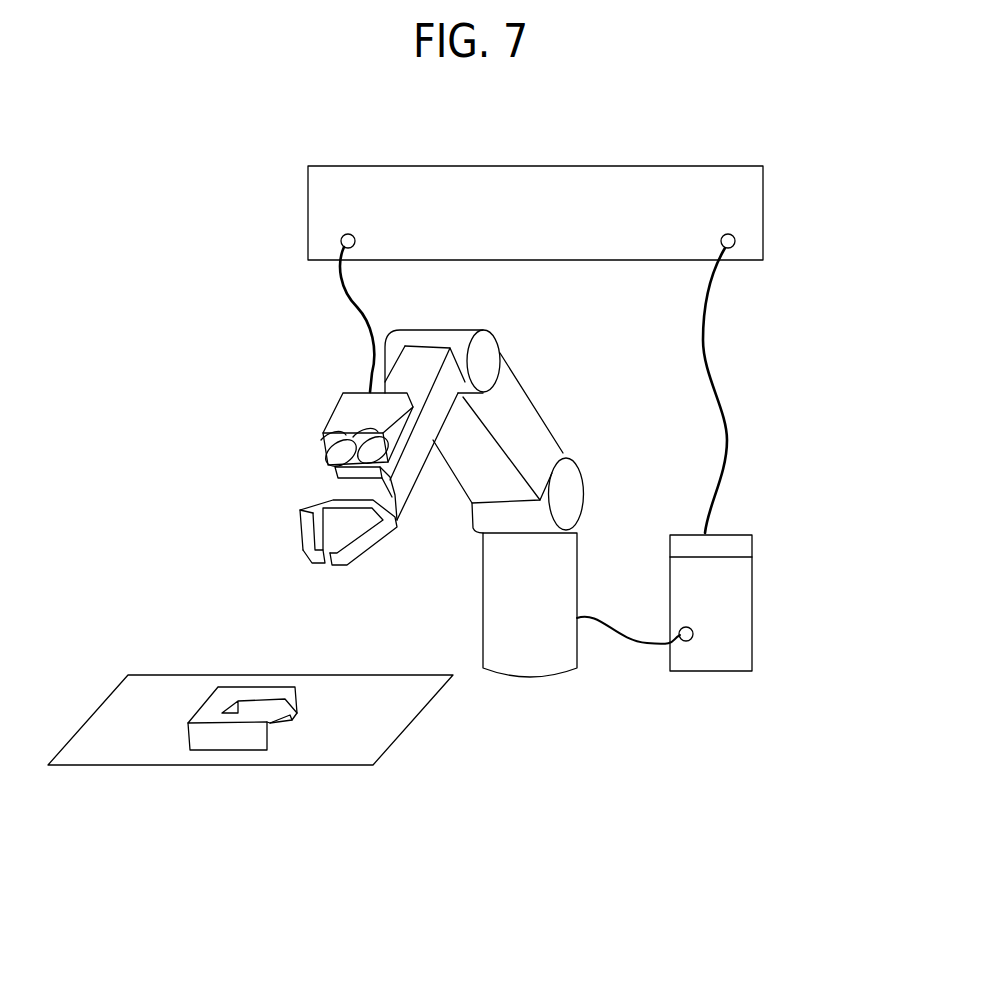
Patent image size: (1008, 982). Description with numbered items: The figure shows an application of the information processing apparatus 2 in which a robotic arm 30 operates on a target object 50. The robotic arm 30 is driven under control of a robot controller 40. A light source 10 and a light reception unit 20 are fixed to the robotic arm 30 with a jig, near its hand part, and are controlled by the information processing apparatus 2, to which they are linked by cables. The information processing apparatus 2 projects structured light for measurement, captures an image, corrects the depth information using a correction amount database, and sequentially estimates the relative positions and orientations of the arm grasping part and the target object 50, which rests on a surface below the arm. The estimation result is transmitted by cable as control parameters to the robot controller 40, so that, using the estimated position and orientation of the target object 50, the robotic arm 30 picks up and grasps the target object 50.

The information processing apparatus 2 is at (535, 349).
The light source 10 is at (325, 433).
The light reception unit 20 is at (327, 452).
The robotic arm 30 is at (533, 678).
The robot controller 40 is at (753, 608).
The target object 50 is at (285, 728).